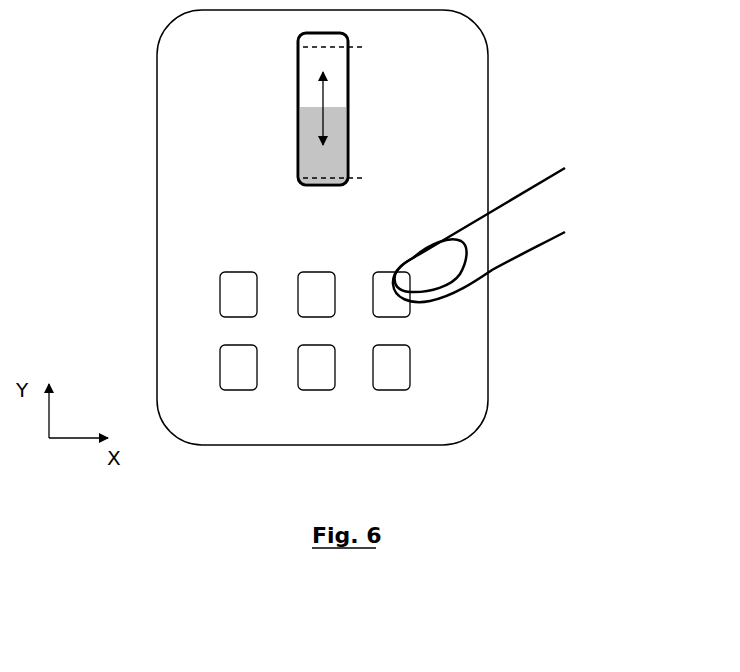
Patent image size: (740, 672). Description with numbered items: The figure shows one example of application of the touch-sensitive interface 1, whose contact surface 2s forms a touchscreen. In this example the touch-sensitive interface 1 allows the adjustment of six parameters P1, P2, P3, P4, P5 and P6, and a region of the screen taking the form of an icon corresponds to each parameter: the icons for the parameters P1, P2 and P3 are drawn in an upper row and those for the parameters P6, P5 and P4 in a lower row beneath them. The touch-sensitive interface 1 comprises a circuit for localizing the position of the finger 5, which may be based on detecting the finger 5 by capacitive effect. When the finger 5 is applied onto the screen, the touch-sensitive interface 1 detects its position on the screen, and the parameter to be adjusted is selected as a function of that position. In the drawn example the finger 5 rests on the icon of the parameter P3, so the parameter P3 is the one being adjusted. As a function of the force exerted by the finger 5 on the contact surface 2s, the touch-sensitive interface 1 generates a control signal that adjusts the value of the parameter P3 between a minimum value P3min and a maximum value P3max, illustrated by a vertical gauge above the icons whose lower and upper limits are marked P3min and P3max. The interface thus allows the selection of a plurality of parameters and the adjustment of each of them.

The touch-sensitive interface 1 is at (493, 73).
The contact surface 2s is at (183, 210).
The finger 5 is at (499, 207).
The parameter P1 is at (237, 294).
The parameter P2 is at (315, 294).
The parameter P3 is at (384, 286).
The parameter P4 is at (398, 371).
The parameter P5 is at (316, 371).
The parameter P6 is at (237, 371).
The maximum value P3max is at (370, 46).
The minimum value P3min is at (367, 177).